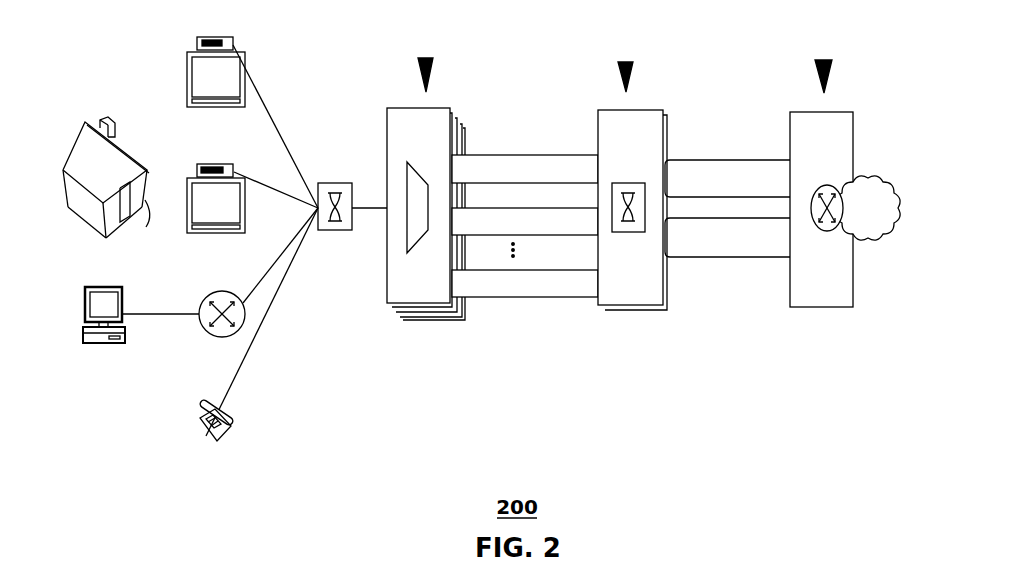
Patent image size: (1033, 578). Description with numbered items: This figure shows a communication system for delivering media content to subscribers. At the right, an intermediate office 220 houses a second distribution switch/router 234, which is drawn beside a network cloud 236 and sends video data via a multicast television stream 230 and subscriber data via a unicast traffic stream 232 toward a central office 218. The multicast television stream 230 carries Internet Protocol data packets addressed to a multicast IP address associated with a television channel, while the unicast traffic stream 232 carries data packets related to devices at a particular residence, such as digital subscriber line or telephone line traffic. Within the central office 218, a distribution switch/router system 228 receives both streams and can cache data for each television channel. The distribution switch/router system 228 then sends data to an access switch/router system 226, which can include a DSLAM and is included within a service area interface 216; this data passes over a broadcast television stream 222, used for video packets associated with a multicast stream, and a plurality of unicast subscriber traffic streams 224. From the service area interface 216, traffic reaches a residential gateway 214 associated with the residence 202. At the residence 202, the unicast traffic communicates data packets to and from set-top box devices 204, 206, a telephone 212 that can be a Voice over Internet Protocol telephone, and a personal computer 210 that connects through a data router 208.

The residence 202 is at (88, 122).
The set-top box device 204 is at (213, 37).
The set-top box device 206 is at (213, 164).
The data router 208 is at (220, 291).
The personal computer 210 is at (103, 343).
The telephone 212 is at (200, 438).
The residential gateway 214 is at (337, 230).
The service area interface 216 is at (433, 60).
The central office 218 is at (633, 61).
The intermediate office 220 is at (832, 62).
The broadcast television (BTV) stream 222 is at (572, 153).
The unicast subscriber traffic streams 224 is at (525, 235).
The access switch/router system 226 is at (420, 243).
The distribution switch/router system 228 is at (630, 233).
The multicast television stream 230 is at (760, 158).
The unicast traffic stream 232 is at (707, 257).
The second distribution switch/router 234 is at (823, 232).
The network cloud / Internet 236 is at (868, 174).